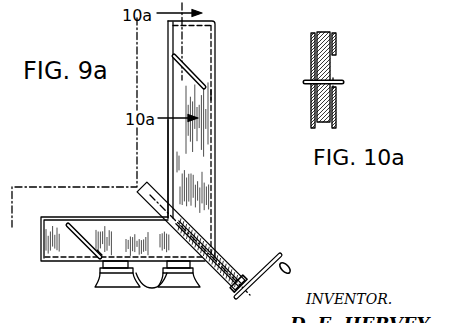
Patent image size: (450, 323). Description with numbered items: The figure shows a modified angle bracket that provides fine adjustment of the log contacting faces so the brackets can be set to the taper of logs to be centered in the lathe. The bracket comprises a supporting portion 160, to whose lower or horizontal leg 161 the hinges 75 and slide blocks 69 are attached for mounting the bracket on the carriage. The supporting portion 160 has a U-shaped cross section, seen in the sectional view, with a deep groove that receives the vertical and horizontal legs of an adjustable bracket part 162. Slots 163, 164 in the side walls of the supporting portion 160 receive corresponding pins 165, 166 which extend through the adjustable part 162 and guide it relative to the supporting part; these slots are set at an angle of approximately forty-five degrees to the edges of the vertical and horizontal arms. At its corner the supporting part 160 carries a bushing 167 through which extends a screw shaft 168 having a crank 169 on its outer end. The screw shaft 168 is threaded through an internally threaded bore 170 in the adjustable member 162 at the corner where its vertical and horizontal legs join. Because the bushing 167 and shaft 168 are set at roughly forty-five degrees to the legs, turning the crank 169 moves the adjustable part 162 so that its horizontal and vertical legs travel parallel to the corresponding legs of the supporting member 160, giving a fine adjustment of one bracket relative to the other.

In FIG. 9A, the supporting portion 160 is at (215, 40).
In FIG. 10A, the supporting portion 160 is at (336, 110).
In FIG. 9A, the horizontal leg 161 is at (48, 261).
In FIG. 9A, the adjustable bracket part 162 is at (168, 145).
In FIG. 10A, the adjustable bracket part 162 is at (322, 34).
In FIG. 9A, the slot 163 is at (305, 68).
In FIG. 10A, the slot 163 is at (336, 70).
In FIG. 9A, the slot 164 is at (72, 232).
In FIG. 9A, the pin 165 is at (305, 85).
In FIG. 9A, the pin 166 is at (96, 257).
In FIG. 9A, the bushing 167 is at (222, 257).
In FIG. 9A, the screw shaft 168 is at (252, 277).
In FIG. 9A, the crank 169 is at (286, 262).
In FIG. 9A, the internally threaded bore 170 is at (200, 235).
In FIG. 9A, the slide blocks 69 is at (115, 284).
In FIG. 9A, the hinges 75 is at (152, 288).